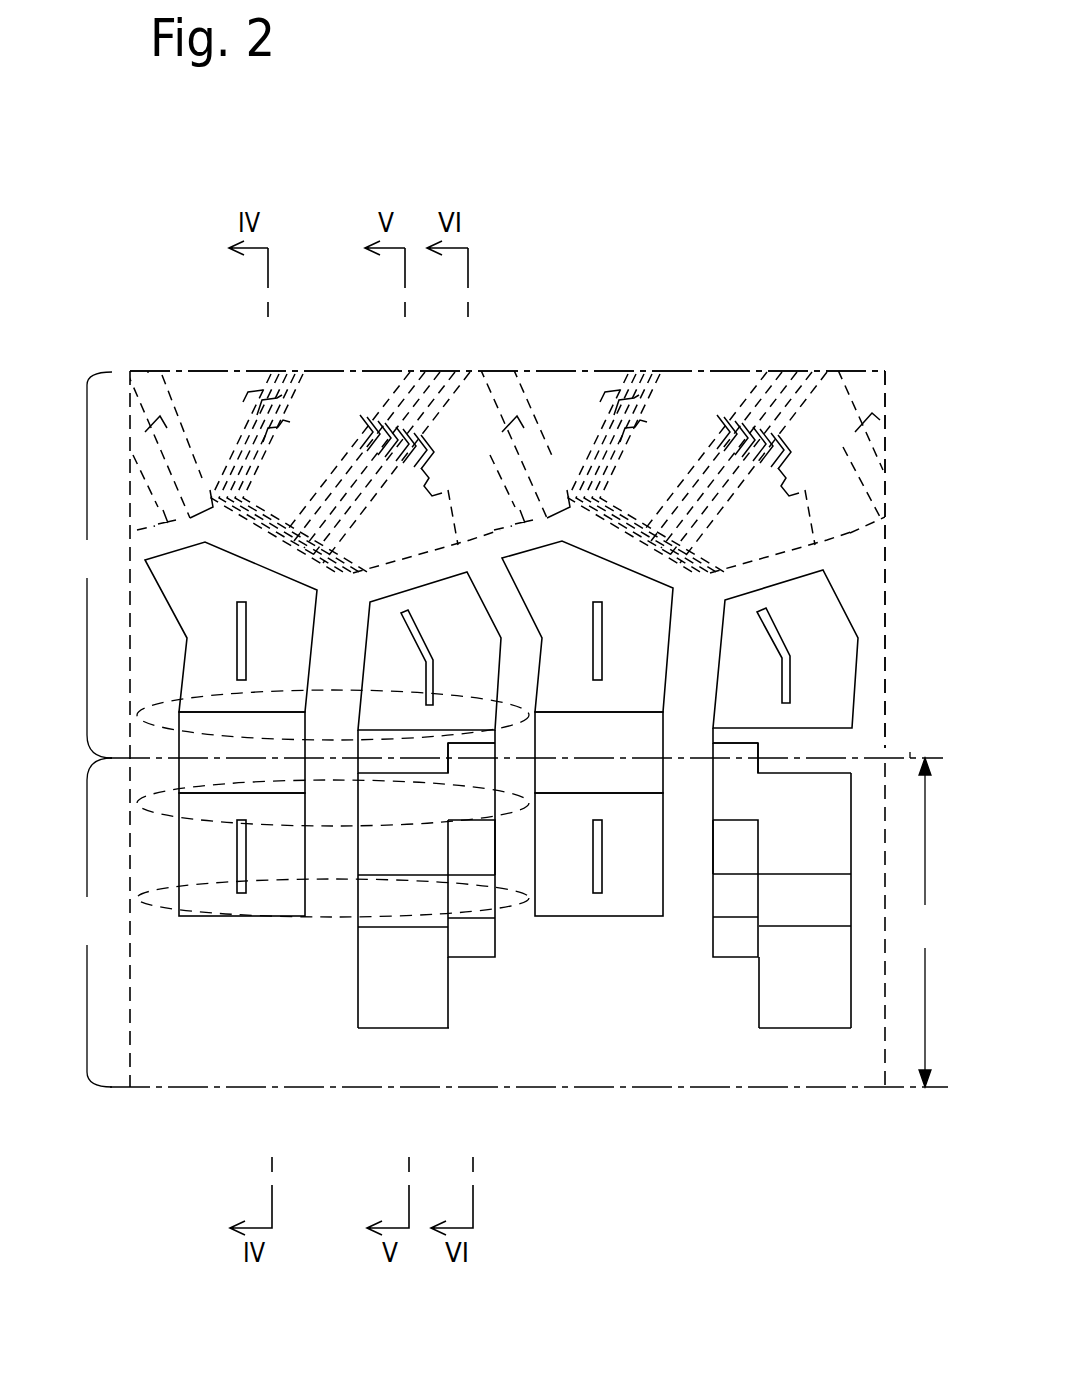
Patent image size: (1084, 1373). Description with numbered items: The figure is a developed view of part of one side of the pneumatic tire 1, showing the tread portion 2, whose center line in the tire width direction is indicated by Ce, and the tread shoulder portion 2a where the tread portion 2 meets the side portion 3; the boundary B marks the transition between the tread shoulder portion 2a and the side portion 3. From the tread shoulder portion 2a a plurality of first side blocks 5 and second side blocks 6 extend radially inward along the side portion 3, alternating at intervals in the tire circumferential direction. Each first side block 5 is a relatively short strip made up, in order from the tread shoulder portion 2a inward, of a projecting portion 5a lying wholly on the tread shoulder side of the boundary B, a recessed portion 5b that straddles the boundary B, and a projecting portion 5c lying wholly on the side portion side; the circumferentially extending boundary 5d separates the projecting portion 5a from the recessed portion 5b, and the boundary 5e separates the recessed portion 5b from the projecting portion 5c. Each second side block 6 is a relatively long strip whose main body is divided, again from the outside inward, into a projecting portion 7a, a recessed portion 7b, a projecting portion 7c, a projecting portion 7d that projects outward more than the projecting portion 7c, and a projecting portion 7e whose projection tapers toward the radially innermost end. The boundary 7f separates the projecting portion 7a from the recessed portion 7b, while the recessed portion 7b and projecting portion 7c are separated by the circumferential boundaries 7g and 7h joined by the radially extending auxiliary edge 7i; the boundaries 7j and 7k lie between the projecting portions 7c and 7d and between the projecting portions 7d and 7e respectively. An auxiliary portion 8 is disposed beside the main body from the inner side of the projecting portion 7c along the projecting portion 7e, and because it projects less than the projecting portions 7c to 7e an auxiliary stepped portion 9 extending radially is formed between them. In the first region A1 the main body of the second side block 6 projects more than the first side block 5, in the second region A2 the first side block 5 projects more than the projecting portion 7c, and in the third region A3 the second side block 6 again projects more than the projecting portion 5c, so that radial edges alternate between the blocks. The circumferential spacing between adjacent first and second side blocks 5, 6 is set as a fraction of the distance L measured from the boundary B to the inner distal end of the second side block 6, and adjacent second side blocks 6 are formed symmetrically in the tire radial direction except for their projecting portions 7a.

The pneumatic tire 1 is at (815, 249).
The tread portion 2 is at (95, 565).
The tread shoulder portion 2a is at (875, 710).
The side portion 3 is at (95, 922).
The first side block 5 is at (244, 918).
The projecting portion 5a is at (198, 677).
The recessed portion 5b is at (200, 746).
The projecting portion 5c is at (200, 846).
The boundary 5d is at (279, 712).
The boundary 5e is at (280, 797).
The second side block 6 is at (408, 1031).
The projecting portion 7a is at (478, 643).
The recessed portion 7b is at (385, 753).
The projecting portion 7c is at (378, 855).
The projecting portion 7d is at (410, 905).
The projecting portion 7e is at (423, 1012).
The boundary 7f is at (455, 728).
The boundary 7g is at (412, 777).
The boundary 7h is at (465, 745).
The boundary (auxiliary edge) 7i is at (450, 767).
The boundary 7j is at (425, 873).
The boundary 7k is at (397, 930).
The auxiliary portion 8 is at (478, 945).
The auxiliary stepped portion 9 is at (450, 935).
The first region A1 is at (140, 692).
The second region A2 is at (143, 780).
The third region A3 is at (143, 877).
The boundary B is at (910, 752).
The center line Ce is at (148, 370).
The distance L is at (925, 922).